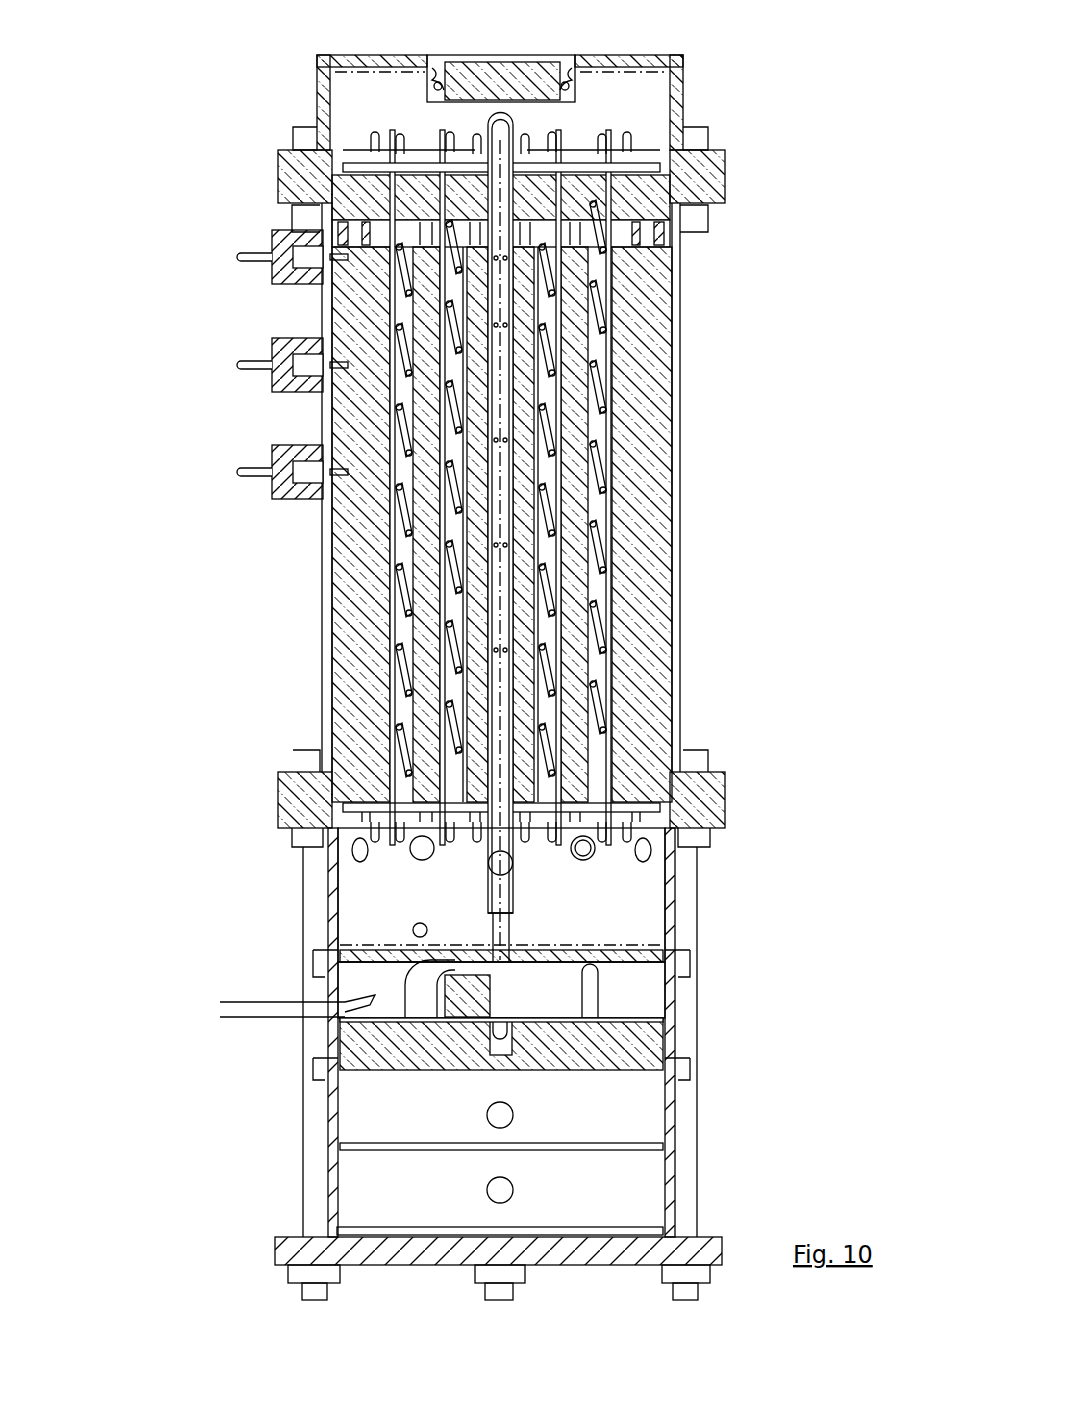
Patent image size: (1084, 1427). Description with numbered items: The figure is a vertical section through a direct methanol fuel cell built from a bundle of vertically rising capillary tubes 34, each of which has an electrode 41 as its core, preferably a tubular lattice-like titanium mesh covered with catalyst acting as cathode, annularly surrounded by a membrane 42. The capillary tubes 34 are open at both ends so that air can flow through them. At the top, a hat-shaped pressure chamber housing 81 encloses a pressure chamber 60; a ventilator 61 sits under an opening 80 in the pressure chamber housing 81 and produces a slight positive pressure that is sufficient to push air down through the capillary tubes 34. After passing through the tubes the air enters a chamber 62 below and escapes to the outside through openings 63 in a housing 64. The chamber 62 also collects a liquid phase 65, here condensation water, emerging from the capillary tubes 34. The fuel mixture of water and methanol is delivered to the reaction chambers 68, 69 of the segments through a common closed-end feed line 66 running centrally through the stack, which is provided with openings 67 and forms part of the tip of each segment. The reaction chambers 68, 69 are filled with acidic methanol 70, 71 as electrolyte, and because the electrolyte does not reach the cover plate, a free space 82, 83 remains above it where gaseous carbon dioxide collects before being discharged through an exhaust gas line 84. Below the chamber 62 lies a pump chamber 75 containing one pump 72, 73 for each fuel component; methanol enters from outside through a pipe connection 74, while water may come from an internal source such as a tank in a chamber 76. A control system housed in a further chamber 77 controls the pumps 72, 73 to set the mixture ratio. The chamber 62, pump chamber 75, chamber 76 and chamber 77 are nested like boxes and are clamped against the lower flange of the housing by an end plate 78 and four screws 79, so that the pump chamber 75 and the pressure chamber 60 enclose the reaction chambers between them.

The capillary tubes 34 is at (463, 487).
The electrode 41 is at (393, 425).
The membrane 42 is at (398, 348).
The pressure chamber 60 is at (660, 95).
The ventilator 61 is at (522, 58).
The chamber 62 is at (638, 908).
The openings 63 is at (588, 850).
The housing 64 is at (327, 908).
The liquid phase 65 is at (332, 946).
The feed line 66 is at (506, 565).
The openings 67 is at (507, 650).
The reaction chamber 68 is at (327, 556).
The reaction chamber 69 is at (665, 478).
The acidic methanol 70 is at (345, 525).
The acidic methanol 71 is at (660, 292).
The pump 72 is at (348, 1048).
The pump 73 is at (650, 1043).
The pipe connection 74 is at (372, 1000).
The pump chamber 75 is at (648, 987).
The chamber 76 is at (637, 1093).
The chamber 77 is at (637, 1167).
The end plate 78 is at (327, 1248).
The screws 79 is at (312, 1185).
The opening 80 is at (458, 58).
The pressure chamber housing 81 is at (318, 100).
The free space 82 is at (340, 233).
The free space 83 is at (630, 230).
The exhaust gas line 84 is at (500, 185).